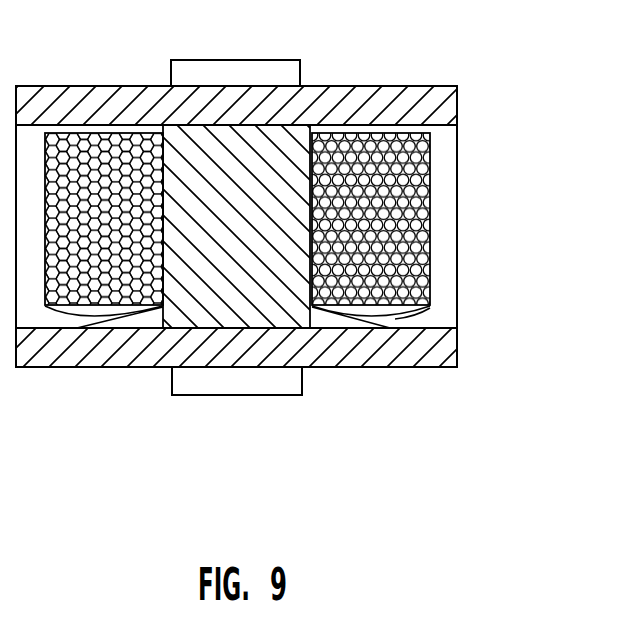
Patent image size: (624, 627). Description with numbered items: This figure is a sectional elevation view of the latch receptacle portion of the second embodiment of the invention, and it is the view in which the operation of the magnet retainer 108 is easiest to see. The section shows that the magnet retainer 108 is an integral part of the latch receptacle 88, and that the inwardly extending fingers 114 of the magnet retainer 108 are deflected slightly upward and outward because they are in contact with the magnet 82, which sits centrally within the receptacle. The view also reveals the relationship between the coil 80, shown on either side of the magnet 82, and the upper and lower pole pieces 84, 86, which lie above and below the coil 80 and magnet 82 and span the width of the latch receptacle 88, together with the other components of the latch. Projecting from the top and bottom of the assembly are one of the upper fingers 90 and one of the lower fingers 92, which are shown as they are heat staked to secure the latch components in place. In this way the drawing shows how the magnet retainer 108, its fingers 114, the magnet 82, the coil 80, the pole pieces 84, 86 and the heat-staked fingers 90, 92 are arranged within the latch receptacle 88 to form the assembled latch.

The coil 80 is at (403, 267).
The magnet 82 is at (230, 297).
The upper pole piece 84 is at (408, 102).
The lower pole piece 86 is at (447, 352).
The latch receptacle 88 is at (447, 208).
The upper finger 90 is at (245, 68).
The lower finger 92 is at (270, 382).
The magnet retainer 108 is at (410, 322).
The inwardly extending fingers 114 is at (145, 310).